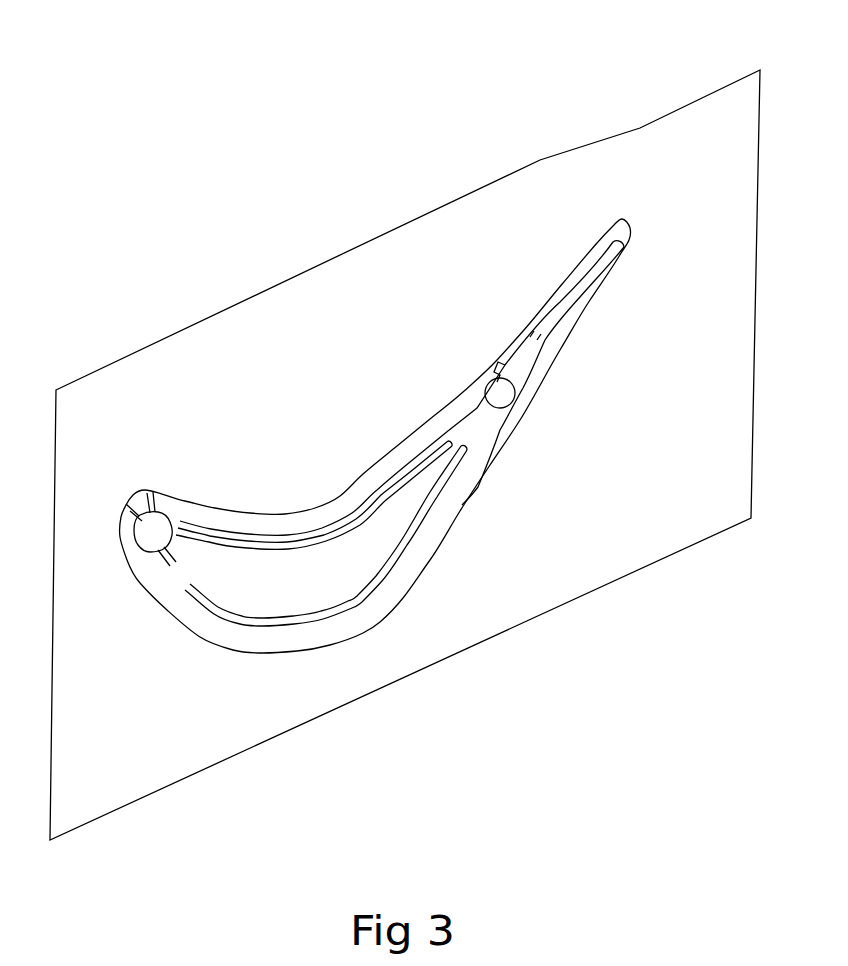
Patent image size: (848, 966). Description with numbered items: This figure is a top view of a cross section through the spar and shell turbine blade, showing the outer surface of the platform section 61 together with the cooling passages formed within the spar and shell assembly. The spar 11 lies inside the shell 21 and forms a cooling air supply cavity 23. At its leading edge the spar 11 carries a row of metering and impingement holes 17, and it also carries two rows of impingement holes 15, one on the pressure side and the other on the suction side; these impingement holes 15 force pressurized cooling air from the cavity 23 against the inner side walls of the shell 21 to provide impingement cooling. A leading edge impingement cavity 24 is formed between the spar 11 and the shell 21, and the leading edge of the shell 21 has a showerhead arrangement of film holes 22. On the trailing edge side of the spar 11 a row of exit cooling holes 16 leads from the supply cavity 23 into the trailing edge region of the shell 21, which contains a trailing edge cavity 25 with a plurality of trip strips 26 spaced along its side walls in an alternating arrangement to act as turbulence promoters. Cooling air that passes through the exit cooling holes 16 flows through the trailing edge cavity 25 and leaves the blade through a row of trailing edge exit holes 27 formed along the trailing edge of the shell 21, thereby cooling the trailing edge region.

The spar 11 is at (395, 557).
The impingement holes 15 is at (157, 553).
The exit cooling holes 16 is at (458, 447).
The metering and impingement holes 17 is at (153, 553).
The shell 21 is at (488, 447).
The film holes 22 is at (133, 492).
The cooling air supply cavity 23 is at (270, 575).
The leading edge impingement cavity 24 is at (159, 507).
The trailing edge cavity 25 is at (502, 392).
The trip strips 26 is at (537, 340).
The trailing edge exit holes 27 is at (605, 223).
The platform section 61 is at (707, 183).